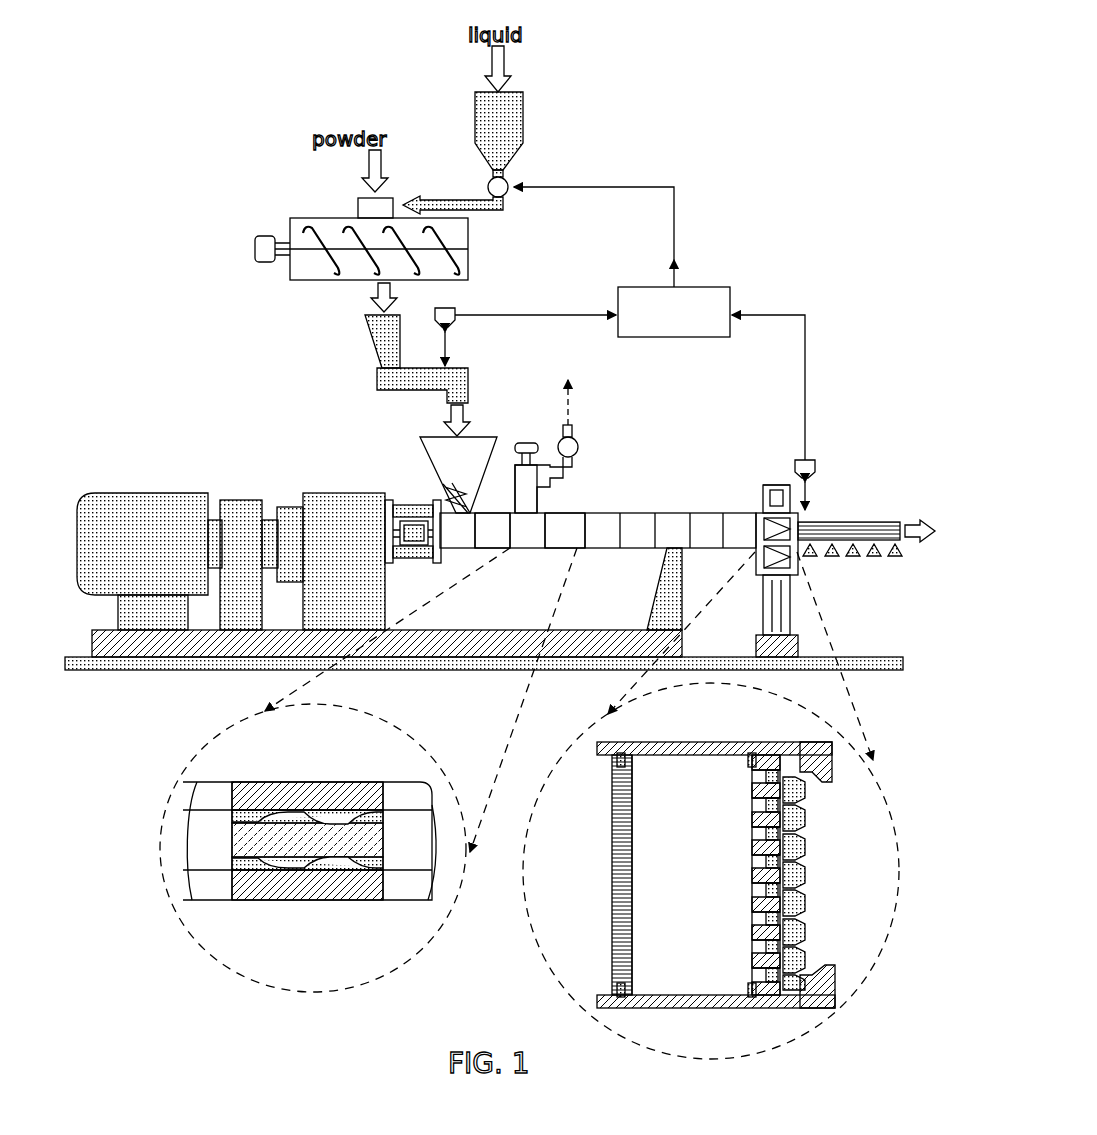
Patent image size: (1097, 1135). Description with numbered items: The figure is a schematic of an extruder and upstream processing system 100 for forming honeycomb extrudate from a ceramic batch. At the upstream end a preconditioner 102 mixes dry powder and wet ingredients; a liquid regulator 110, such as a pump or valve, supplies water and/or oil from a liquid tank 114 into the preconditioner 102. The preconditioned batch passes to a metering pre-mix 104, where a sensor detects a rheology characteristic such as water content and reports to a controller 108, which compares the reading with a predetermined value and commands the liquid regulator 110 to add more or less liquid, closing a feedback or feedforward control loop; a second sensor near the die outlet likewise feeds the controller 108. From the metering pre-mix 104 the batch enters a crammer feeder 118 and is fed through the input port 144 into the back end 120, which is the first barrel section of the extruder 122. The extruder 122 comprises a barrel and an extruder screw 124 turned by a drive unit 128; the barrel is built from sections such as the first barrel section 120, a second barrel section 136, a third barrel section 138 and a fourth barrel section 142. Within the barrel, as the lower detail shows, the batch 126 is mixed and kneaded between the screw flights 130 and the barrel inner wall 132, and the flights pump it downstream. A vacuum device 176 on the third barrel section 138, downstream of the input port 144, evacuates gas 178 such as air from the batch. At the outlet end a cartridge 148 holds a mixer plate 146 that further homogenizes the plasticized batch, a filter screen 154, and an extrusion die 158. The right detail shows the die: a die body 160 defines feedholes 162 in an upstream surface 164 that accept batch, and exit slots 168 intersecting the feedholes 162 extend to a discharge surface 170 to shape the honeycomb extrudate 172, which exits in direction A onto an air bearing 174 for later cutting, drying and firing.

The extruder and upstream processing system 100 is at (398, 31).
The preconditioner 102 is at (313, 218).
The metering pre-mix 104 is at (377, 380).
The controller 108 is at (722, 287).
The liquid regulator 110 is at (510, 180).
The liquid tank 114 is at (527, 100).
The crammer feeder 118 is at (430, 470).
The back end 120 is at (447, 553).
The extruder 122 is at (597, 513).
The extruder screw 124 is at (253, 838).
The batch 126 is at (385, 860).
The drive unit 128 is at (235, 485).
The screw flights 130 is at (272, 870).
The barrel inner wall 132 is at (327, 817).
The second barrel section 136 is at (496, 540).
The third barrel section 138 is at (535, 525).
The fourth barrel section 142 is at (562, 540).
The input port 144 is at (445, 490).
The mixer plate 146 is at (757, 530).
The cartridge 148 is at (770, 487).
The filter screen 154 is at (757, 513).
The extrusion die 158 is at (787, 487).
The die body 160 is at (760, 948).
The feedholes 162 is at (755, 802).
The upstream surface 164 is at (752, 850).
The exit slots 168 is at (807, 890).
The discharge surface 170 is at (805, 818).
The honeycomb extrudate 172 is at (845, 522).
The air bearing 174 is at (830, 558).
The vacuum device 176 is at (535, 478).
The gas 178 is at (573, 412).
The extrusion direction A is at (917, 522).